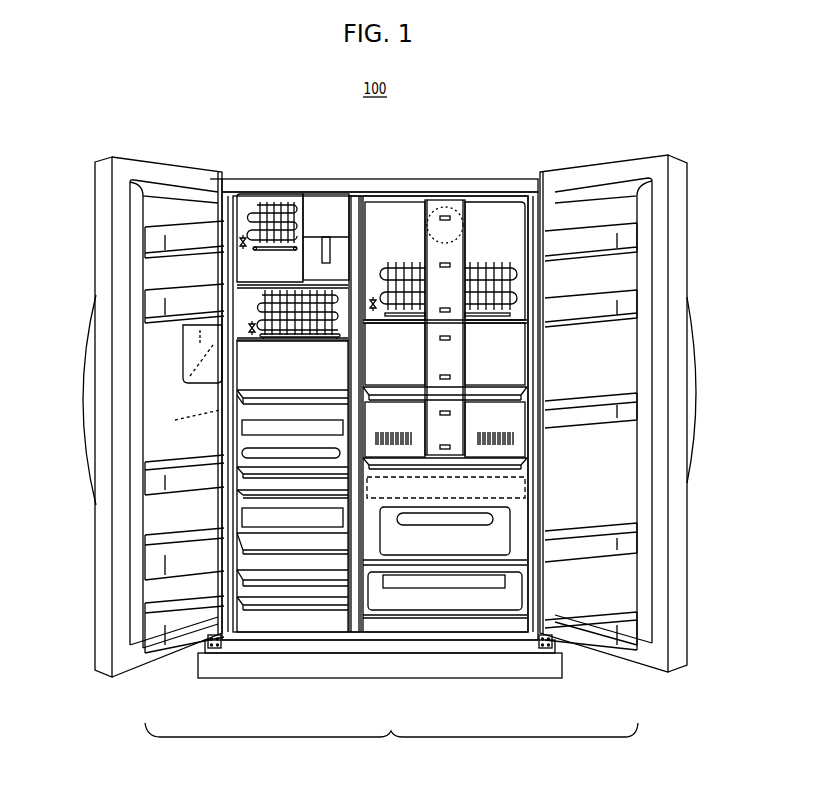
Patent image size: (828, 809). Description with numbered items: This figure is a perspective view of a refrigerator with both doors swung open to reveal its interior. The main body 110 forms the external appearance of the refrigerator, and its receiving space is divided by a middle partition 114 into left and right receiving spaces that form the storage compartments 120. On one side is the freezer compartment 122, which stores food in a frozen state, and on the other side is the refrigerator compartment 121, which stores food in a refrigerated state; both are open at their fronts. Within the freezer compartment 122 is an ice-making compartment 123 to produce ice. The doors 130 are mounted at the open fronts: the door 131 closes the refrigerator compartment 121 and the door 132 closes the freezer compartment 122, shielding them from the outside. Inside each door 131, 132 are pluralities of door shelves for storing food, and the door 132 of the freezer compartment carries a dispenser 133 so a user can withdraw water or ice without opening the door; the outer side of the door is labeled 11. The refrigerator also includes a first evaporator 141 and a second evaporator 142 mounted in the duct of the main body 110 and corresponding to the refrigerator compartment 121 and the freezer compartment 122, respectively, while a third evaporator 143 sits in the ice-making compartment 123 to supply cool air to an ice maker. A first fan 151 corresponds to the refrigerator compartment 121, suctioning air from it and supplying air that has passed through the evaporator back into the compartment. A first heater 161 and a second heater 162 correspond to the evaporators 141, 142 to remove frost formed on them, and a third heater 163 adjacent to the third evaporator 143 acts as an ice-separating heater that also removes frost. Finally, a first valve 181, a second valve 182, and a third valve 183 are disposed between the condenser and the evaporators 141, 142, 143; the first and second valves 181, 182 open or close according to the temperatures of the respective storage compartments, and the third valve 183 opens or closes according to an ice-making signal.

The door outer panel 11 is at (679, 172).
The main body 110 is at (428, 178).
The middle partition 114 is at (361, 216).
The storage compartments 120 is at (382, 461).
The refrigerator compartment 121 is at (373, 703).
The freezer compartment 122 is at (373, 703).
The ice-making compartment 123 is at (283, 277).
The doors 130 is at (391, 745).
The door 131 is at (632, 659).
The door 132 is at (150, 660).
The dispenser 133 is at (192, 350).
The first evaporator 141 is at (500, 275).
The second evaporator 142 is at (320, 334).
The third evaporator 143 is at (297, 212).
The first fan 151 is at (455, 208).
The first heater 161 is at (491, 316).
The second heater 162 is at (273, 338).
The third heater 163 is at (294, 252).
The first valve 181 is at (373, 312).
The second valve 182 is at (252, 320).
The third valve 183 is at (243, 234).